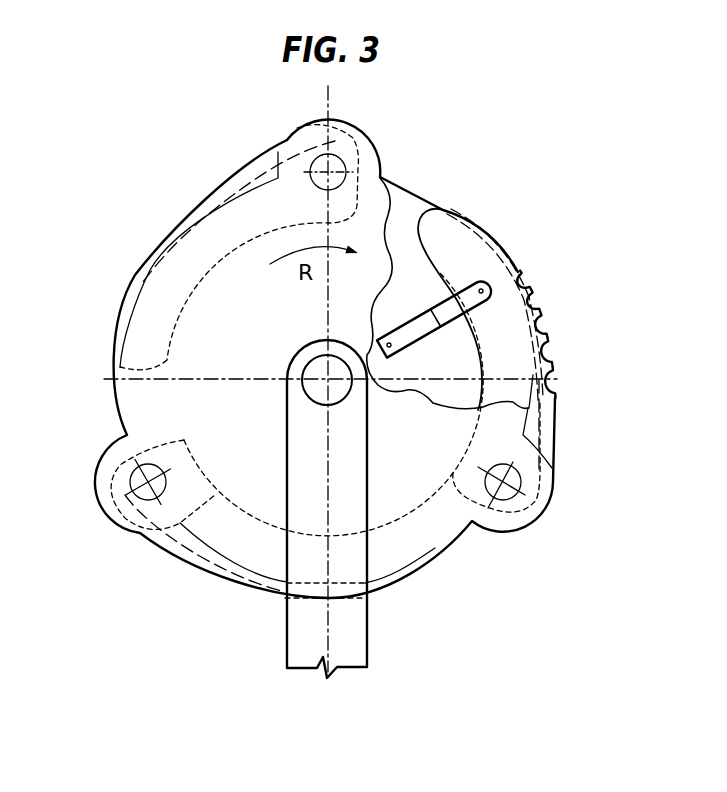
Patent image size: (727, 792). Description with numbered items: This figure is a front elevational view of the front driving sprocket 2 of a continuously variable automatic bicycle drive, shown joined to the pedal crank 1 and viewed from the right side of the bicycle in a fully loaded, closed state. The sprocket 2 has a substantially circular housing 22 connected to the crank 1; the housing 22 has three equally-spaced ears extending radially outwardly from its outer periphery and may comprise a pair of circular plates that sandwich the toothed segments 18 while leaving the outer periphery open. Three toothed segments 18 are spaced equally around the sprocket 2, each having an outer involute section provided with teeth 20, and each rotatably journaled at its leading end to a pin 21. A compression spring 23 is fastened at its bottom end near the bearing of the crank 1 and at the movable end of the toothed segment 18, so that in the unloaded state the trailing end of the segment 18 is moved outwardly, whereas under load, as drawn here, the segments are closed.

The crank 1 is at (350, 638).
The front driving sprocket 2 is at (247, 598).
The toothed segment 18 is at (452, 240).
The teeth 20 is at (523, 293).
The pin 21 is at (342, 162).
The housing 22 is at (225, 298).
The compression spring 23 is at (425, 336).